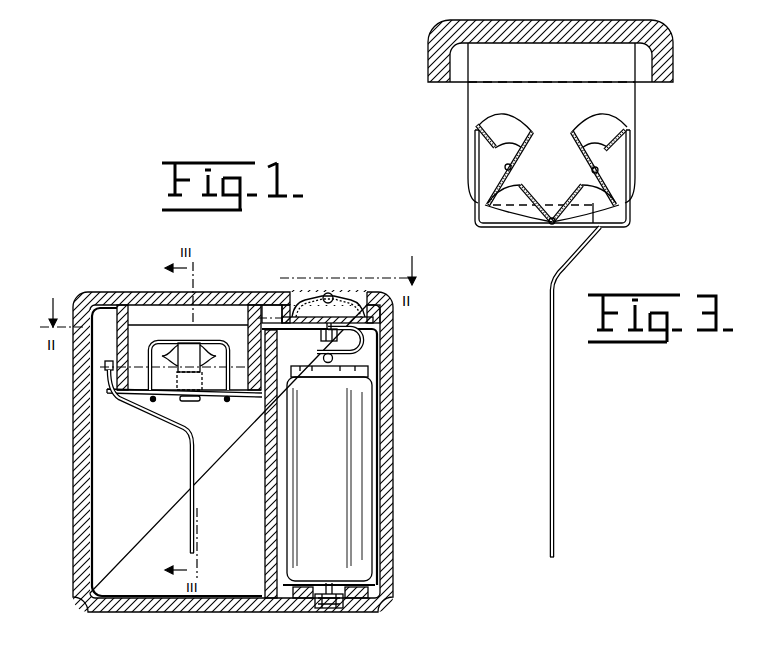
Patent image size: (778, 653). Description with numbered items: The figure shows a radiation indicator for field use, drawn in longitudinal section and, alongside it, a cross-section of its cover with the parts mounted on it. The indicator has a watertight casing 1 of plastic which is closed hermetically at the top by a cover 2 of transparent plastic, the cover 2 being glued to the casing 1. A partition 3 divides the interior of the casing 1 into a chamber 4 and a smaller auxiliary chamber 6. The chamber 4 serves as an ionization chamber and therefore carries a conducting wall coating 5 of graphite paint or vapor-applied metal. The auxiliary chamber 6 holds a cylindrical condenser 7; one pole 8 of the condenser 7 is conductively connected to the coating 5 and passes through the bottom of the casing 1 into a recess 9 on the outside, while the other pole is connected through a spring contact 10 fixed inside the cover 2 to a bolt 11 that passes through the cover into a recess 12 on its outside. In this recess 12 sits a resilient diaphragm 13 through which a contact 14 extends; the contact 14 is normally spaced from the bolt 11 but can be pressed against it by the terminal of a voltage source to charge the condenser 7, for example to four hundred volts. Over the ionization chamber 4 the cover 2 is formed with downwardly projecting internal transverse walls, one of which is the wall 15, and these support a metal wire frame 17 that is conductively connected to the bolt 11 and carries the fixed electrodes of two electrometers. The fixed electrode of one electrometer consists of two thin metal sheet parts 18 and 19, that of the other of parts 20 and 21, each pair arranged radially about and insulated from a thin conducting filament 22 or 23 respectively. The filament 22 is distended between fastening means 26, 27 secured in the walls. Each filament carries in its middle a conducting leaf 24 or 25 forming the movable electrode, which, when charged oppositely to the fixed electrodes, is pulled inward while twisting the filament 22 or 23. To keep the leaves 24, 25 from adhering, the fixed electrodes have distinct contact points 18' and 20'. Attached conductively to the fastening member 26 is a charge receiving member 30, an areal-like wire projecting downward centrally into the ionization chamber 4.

In FIG. 1, the watertight casing 1 is at (80, 545).
In FIG. 1, the cover 2 is at (150, 293).
In FIG. 3, the cover 2 is at (443, 42).
In FIG. 1, the partition 3 is at (265, 518).
In FIG. 1, the chamber 4 is at (104, 482).
In FIG. 1, the conducting wall coating 5 is at (91, 514).
In FIG. 1, the auxiliary chamber 6 is at (372, 358).
In FIG. 1, the cylindrical condenser 7 is at (357, 483).
In FIG. 1, the pole of the condenser 8 is at (330, 611).
In FIG. 1, the recess 9 is at (347, 611).
In FIG. 1, the spring contact 10 is at (360, 344).
In FIG. 1, the bolt 11 is at (320, 336).
In FIG. 1, the recess 12 is at (359, 295).
In FIG. 1, the resilient diaphragm 13 is at (342, 292).
In FIG. 1, the contact 14 is at (329, 293).
In FIG. 1, the internal transverse wall 15 is at (121, 338).
In FIG. 3, the internal transverse wall 15 is at (471, 90).
In FIG. 1, the metal wire frame 17 is at (153, 401).
In FIG. 3, the metal wire frame 17 is at (613, 228).
In FIG. 1, the fixed electrode part 18 is at (205, 329).
In FIG. 3, the fixed electrode part 18 is at (599, 121).
In FIG. 3, the contact point 18' is at (640, 138).
In FIG. 1, the fixed electrode part 19 is at (205, 401).
In FIG. 3, the fixed electrode part 19 is at (575, 212).
In FIG. 3, the fixed electrode part 20 is at (505, 121).
In FIG. 3, the contact point 20' is at (465, 143).
In FIG. 3, the fixed electrode part 21 is at (513, 207).
In FIG. 1, the conducting filament 22 is at (142, 370).
In FIG. 3, the conducting filament 22 is at (600, 173).
In FIG. 3, the conducting filament 23 is at (511, 166).
In FIG. 1, the conducting leaf 24 is at (189, 345).
In FIG. 3, the conducting leaf 24 is at (582, 161).
In FIG. 3, the conducting leaf 25 is at (523, 137).
In FIG. 1, the fastening means 26 is at (106, 367).
In FIG. 1, the fastening means 27 is at (241, 376).
In FIG. 1, the charge receiving member 30 is at (194, 481).
In FIG. 3, the charge receiving member 30 is at (554, 392).